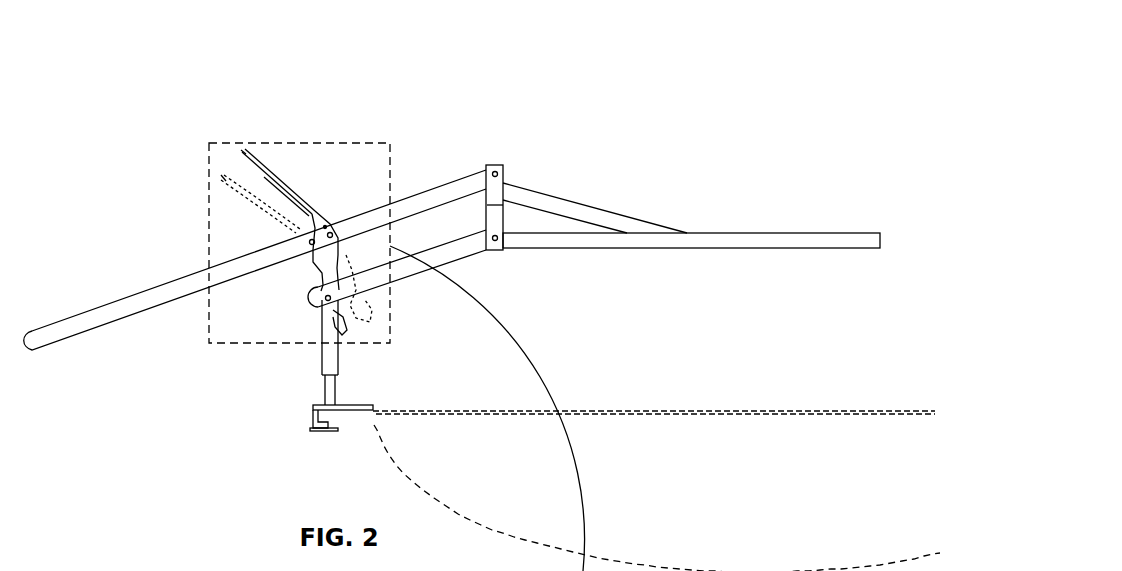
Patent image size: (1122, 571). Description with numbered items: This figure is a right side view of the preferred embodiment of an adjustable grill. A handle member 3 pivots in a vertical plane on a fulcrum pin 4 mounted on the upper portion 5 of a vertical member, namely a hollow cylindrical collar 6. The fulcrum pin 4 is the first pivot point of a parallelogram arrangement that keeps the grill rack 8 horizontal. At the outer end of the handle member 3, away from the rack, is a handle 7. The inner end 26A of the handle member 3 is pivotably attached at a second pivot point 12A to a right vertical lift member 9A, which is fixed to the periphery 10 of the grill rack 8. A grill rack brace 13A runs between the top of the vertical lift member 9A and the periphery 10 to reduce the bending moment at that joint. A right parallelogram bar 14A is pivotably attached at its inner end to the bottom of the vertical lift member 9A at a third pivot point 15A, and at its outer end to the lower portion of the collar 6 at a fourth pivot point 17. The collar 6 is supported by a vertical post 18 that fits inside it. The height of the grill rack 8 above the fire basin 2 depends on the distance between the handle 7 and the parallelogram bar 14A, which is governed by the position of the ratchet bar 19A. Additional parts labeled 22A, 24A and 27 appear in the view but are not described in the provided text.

The fire basin 2 is at (681, 501).
The handle member 3 is at (170, 237).
The fulcrum pin 4 is at (331, 232).
The upper portion 5 is at (338, 243).
The hollow cylindrical collar 6 is at (325, 226).
The handle 7 is at (58, 330).
The grill rack 8 is at (727, 186).
The right vertical lift member 9A is at (492, 208).
The periphery 10 is at (592, 240).
The second pivot point 12A is at (495, 172).
The grill rack brace 13A is at (557, 207).
The right parallelogram bar 14A is at (413, 270).
The third pivot point 15A is at (497, 242).
The fourth pivot point 17 is at (322, 308).
The vertical post 18 is at (332, 388).
The ratchet bar 19A is at (298, 233).
The lever 22A is at (242, 152).
The support post 24A is at (342, 330).
The inner end 26A is at (427, 202).
The pivot joint 27 is at (316, 281).